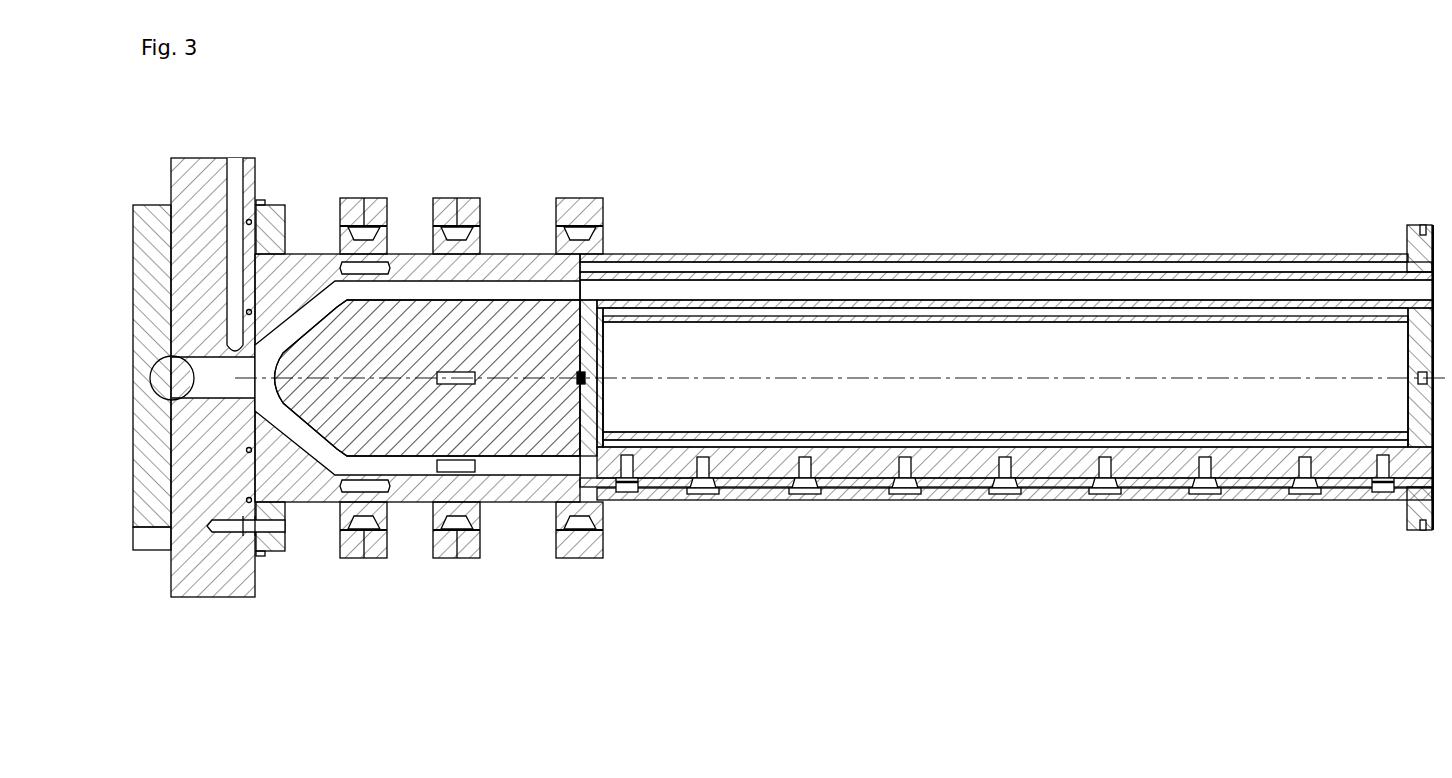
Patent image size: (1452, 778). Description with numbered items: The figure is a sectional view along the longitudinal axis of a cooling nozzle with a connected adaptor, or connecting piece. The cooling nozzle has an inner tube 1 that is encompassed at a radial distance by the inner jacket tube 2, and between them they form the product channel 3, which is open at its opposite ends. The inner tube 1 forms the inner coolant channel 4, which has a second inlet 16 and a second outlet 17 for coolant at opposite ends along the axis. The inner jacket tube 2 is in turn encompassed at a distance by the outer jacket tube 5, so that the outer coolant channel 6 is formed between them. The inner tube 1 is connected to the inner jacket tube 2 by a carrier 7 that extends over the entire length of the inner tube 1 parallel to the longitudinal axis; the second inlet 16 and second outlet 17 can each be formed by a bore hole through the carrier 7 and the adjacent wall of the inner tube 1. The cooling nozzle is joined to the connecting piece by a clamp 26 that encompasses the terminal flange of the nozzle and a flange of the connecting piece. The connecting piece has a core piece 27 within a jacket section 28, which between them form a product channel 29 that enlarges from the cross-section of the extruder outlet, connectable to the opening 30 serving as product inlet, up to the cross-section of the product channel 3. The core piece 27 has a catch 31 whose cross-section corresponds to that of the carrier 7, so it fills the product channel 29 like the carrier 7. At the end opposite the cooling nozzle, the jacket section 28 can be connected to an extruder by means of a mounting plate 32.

The inner tube 1 is at (889, 440).
The inner jacket tube 2 is at (1274, 273).
The product channel 3 is at (874, 285).
The inner coolant channel 4 is at (1137, 355).
The outer jacket tube 5 is at (1207, 253).
The outer coolant channel 6 is at (1080, 265).
The carrier 7 is at (953, 465).
The second inlet 16 is at (628, 475).
The second outlet 17 is at (1381, 477).
The clamp 26 is at (373, 197).
The core piece 27 is at (500, 305).
The jacket section 28 is at (412, 250).
The product channel 29 is at (484, 288).
The opening 30 is at (222, 380).
The catch 31 is at (392, 487).
The mounting plate 32 is at (228, 598).